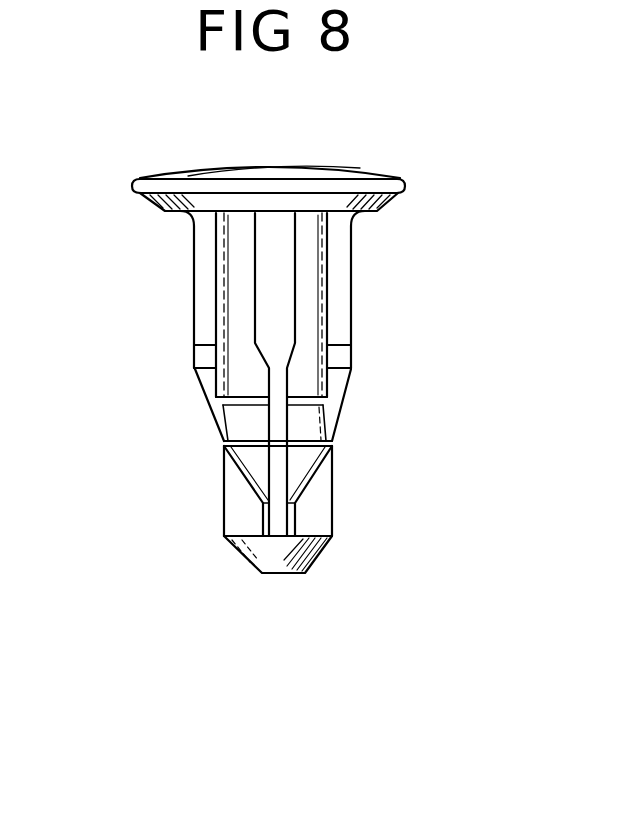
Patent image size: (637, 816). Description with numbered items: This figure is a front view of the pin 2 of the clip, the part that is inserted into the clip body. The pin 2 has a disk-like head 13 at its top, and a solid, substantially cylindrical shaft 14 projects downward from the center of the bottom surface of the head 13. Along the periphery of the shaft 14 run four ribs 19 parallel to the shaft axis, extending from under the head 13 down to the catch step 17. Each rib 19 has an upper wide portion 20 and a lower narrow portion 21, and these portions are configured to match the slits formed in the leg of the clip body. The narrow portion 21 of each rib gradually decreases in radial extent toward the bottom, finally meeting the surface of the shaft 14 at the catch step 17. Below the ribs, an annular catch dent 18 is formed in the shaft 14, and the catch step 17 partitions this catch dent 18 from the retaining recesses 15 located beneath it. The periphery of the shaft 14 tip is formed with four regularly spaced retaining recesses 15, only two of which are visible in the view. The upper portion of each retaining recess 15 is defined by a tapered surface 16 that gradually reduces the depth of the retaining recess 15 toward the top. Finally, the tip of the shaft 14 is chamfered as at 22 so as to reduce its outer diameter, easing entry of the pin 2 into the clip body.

The pin 2 is at (392, 237).
The head 13 is at (363, 175).
The shaft 14 is at (312, 358).
The retaining recess 15 is at (240, 512).
The tapered surface 16 is at (248, 465).
The catch step 17 is at (318, 457).
The catch dent 18 is at (242, 422).
The rib 19 is at (253, 236).
The upper wide portion 20 is at (279, 228).
The lower narrow portion 21 is at (270, 383).
The chamfer 22 is at (313, 558).